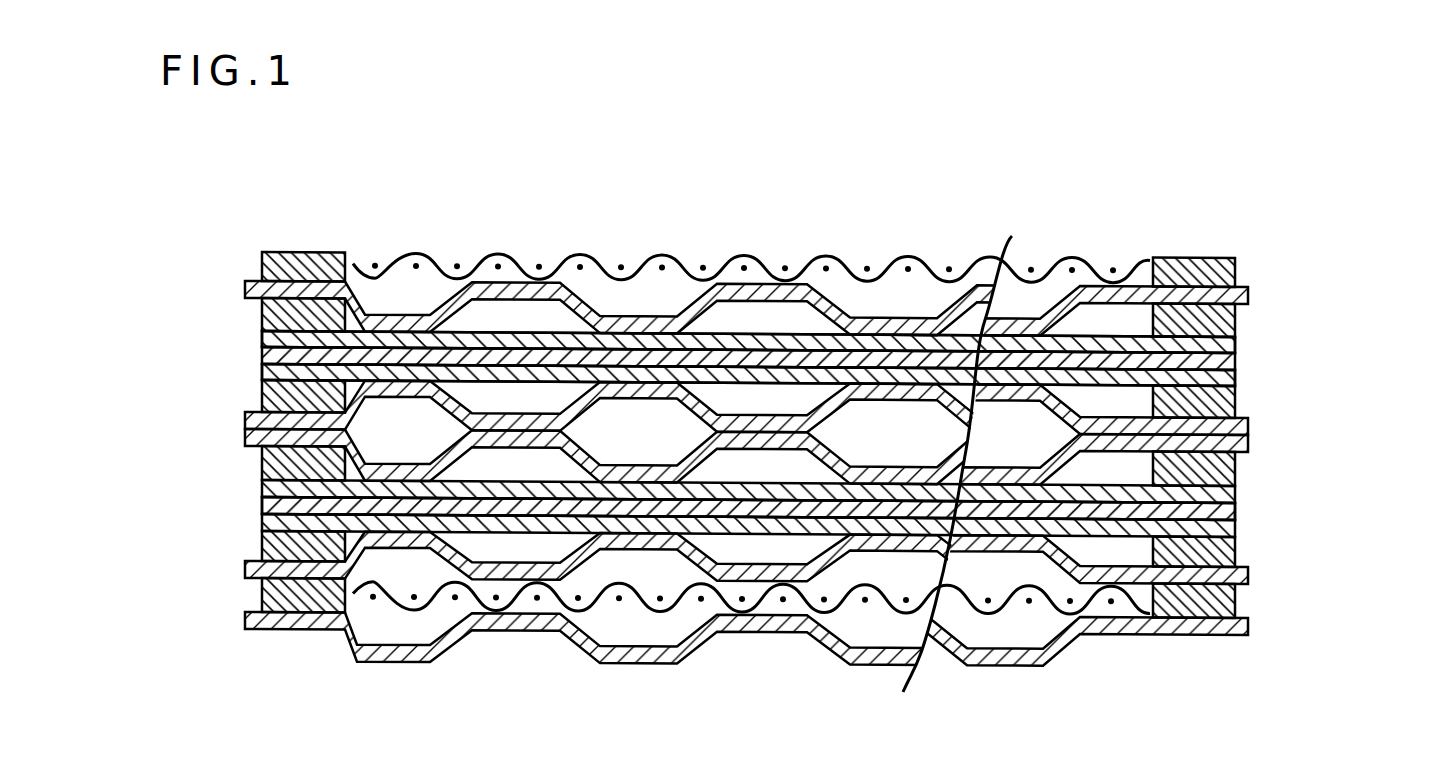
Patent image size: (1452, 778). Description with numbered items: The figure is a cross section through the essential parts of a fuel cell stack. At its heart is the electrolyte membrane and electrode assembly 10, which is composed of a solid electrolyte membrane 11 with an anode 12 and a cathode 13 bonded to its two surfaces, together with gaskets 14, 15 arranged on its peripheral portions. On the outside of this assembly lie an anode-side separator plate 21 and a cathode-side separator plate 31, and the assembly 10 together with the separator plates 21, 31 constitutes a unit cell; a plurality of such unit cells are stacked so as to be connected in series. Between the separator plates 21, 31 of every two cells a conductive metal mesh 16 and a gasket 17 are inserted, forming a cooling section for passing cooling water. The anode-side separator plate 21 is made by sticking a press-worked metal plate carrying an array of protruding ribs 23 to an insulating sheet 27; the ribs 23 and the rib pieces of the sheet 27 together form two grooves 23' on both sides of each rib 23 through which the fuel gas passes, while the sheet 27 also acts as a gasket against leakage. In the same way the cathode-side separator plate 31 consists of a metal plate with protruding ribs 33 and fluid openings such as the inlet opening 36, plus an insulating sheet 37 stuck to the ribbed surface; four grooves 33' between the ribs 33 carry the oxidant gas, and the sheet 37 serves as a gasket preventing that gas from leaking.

The electrolyte membrane and electrode assembly 10 is at (1252, 332).
The solid electrolyte membrane 11 is at (257, 502).
The anode 12 is at (262, 587).
The cathode 13 is at (355, 648).
The gasket 14 is at (262, 330).
The gasket 15 is at (262, 378).
The conductive metal mesh 16 is at (666, 612).
The gasket 17 is at (304, 262).
The anode-side separator plate 21 is at (931, 312).
The protruding ribs 23 is at (639, 326).
The grooves 23' is at (652, 312).
The insulating sheet 27 is at (1235, 467).
The cathode-side separator plate 31 is at (1127, 325).
The protruding ribs 33 is at (639, 661).
The grooves 33' is at (517, 631).
The fluid inlet opening 36 is at (641, 250).
The insulating sheet 37 is at (1235, 392).